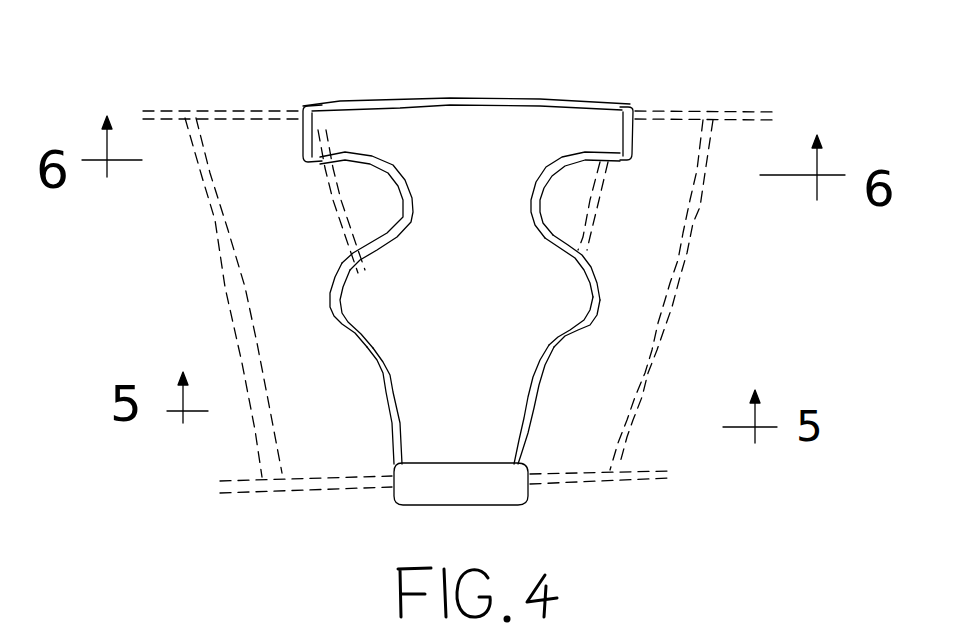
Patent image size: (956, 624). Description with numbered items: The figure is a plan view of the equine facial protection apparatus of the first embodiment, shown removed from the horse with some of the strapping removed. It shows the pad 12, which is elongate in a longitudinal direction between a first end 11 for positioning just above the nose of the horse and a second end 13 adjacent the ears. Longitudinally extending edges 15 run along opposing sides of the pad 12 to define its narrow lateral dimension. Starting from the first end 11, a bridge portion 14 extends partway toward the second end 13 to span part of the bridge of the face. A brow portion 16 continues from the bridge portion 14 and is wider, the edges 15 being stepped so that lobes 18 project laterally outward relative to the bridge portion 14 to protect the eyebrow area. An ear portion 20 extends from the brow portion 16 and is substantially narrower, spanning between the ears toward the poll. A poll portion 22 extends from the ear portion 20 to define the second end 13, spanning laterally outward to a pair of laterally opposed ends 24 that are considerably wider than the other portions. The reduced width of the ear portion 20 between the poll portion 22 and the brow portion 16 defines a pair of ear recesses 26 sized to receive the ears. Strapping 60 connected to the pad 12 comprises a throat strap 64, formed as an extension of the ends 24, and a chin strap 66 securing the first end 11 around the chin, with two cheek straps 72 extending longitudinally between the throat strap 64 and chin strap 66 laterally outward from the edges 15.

The first end 11 is at (463, 505).
The pad 12 is at (481, 70).
The second end 13 is at (533, 100).
The bridge portion 14 is at (508, 400).
The longitudinally extending edges 15 is at (375, 358).
The brow portion 16 is at (476, 286).
The lobes 18 is at (330, 300).
The ear portion 20 is at (460, 198).
The poll portion 22 is at (462, 133).
The laterally opposed ends 24 is at (333, 128).
The ear recesses 26 is at (412, 200).
The strapping 60 is at (252, 508).
The throat strap 64 is at (745, 108).
The chin strap 66 is at (588, 477).
The cheek straps 72 is at (645, 374).